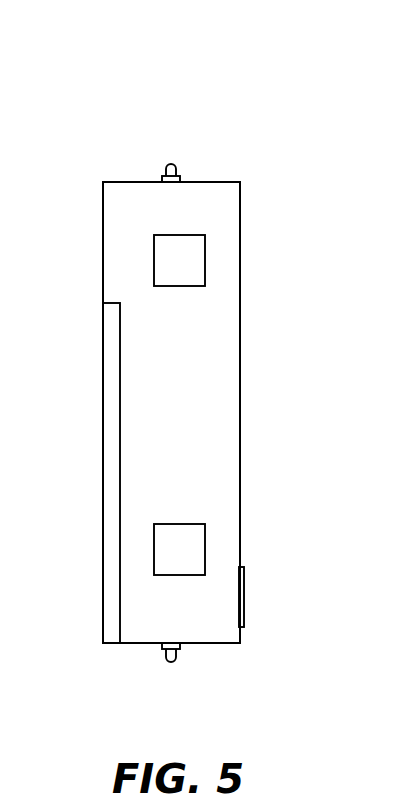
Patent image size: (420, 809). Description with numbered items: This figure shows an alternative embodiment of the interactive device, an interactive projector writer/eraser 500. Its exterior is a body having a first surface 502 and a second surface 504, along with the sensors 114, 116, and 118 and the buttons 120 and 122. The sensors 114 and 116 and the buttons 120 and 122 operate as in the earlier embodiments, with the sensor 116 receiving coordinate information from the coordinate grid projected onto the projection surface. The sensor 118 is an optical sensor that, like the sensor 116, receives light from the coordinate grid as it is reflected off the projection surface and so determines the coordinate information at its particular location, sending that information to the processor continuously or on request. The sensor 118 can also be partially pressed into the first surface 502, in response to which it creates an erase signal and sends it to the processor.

The interactive projector writer/eraser 500 is at (127, 106).
The first surface 502 is at (122, 220).
The second surface 504 is at (112, 397).
The button 122 is at (205, 259).
The button 120 is at (205, 531).
The sensor 116 is at (176, 167).
The sensor 118 is at (176, 659).
The sensor 114 is at (244, 590).